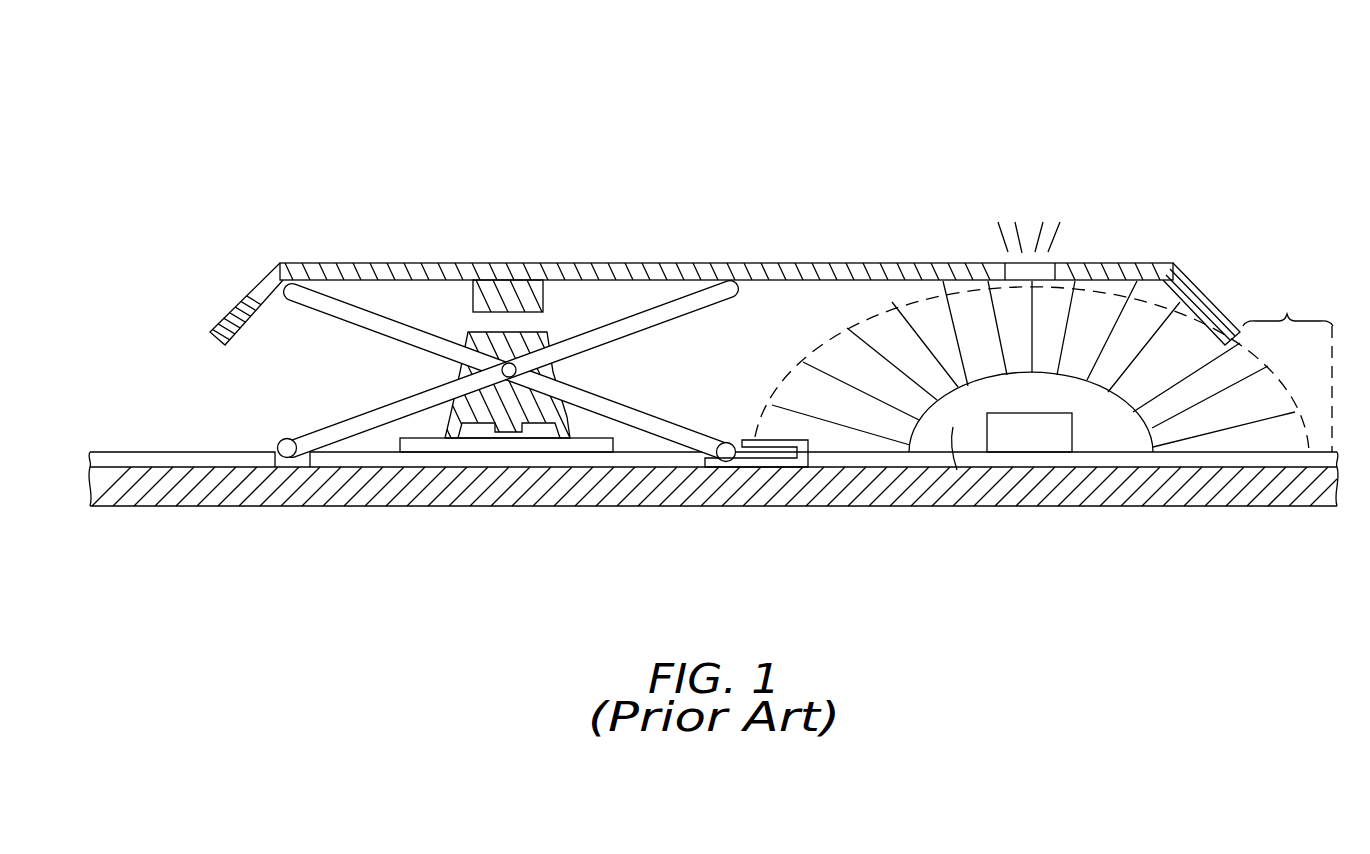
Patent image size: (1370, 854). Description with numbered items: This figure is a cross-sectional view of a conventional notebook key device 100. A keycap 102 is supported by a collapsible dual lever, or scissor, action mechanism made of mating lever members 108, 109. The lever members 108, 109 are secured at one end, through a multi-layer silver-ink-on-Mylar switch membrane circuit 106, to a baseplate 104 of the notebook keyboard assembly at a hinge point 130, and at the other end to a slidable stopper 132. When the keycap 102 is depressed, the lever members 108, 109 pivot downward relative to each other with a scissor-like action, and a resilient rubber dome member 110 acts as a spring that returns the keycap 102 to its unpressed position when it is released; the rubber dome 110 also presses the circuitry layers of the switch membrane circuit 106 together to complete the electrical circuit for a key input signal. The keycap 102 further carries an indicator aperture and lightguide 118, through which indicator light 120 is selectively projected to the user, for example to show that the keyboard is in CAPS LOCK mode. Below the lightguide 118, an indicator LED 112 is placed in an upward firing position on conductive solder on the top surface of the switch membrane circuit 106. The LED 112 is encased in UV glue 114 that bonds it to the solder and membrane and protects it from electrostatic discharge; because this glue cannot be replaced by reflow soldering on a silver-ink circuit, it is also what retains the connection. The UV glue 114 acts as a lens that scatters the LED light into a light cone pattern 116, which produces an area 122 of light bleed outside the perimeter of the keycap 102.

The notebook key device 100 is at (226, 96).
The keycap 102 is at (497, 276).
The baseplate 104 is at (180, 500).
The switch membrane circuit 106 is at (130, 450).
The lever member 108 is at (345, 311).
The lever member 109 is at (362, 426).
The rubber dome member 110 is at (495, 321).
The indicator LED 112 is at (1035, 432).
The UV glue 114 is at (957, 470).
The light cone pattern 116 is at (872, 398).
The indicator aperture and lightguide 118 is at (1038, 273).
The light 120 is at (1028, 220).
The area of light bleed 122 is at (1288, 370).
The hinge point 130 is at (288, 470).
The slidable stopper 132 is at (750, 457).